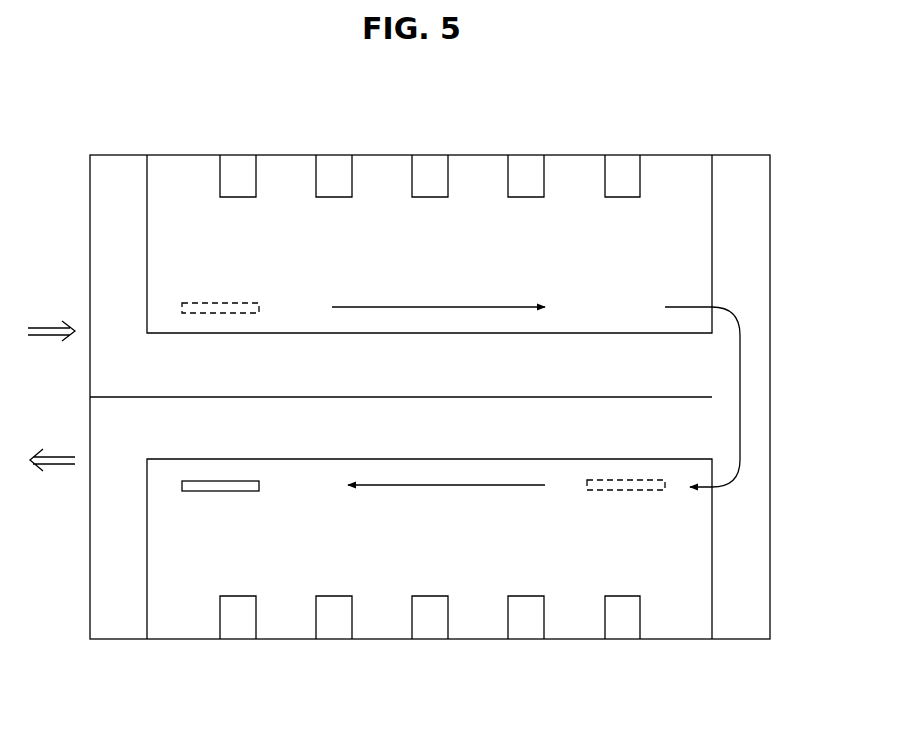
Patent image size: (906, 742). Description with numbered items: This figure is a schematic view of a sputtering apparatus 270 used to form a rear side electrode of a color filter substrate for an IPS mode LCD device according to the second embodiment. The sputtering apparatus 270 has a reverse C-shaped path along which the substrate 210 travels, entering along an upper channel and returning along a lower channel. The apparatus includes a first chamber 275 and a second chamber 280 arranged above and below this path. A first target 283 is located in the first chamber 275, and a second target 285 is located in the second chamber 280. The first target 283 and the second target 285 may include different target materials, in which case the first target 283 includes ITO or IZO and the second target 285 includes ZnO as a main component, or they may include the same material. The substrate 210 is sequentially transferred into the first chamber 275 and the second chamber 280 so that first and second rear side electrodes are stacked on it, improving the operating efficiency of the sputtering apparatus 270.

The substrate 210 is at (219, 302).
The sputtering apparatus 270 is at (688, 133).
The first chamber 275 is at (575, 180).
The second chamber 280 is at (685, 577).
The first target 283 is at (428, 160).
The second target 285 is at (336, 640).